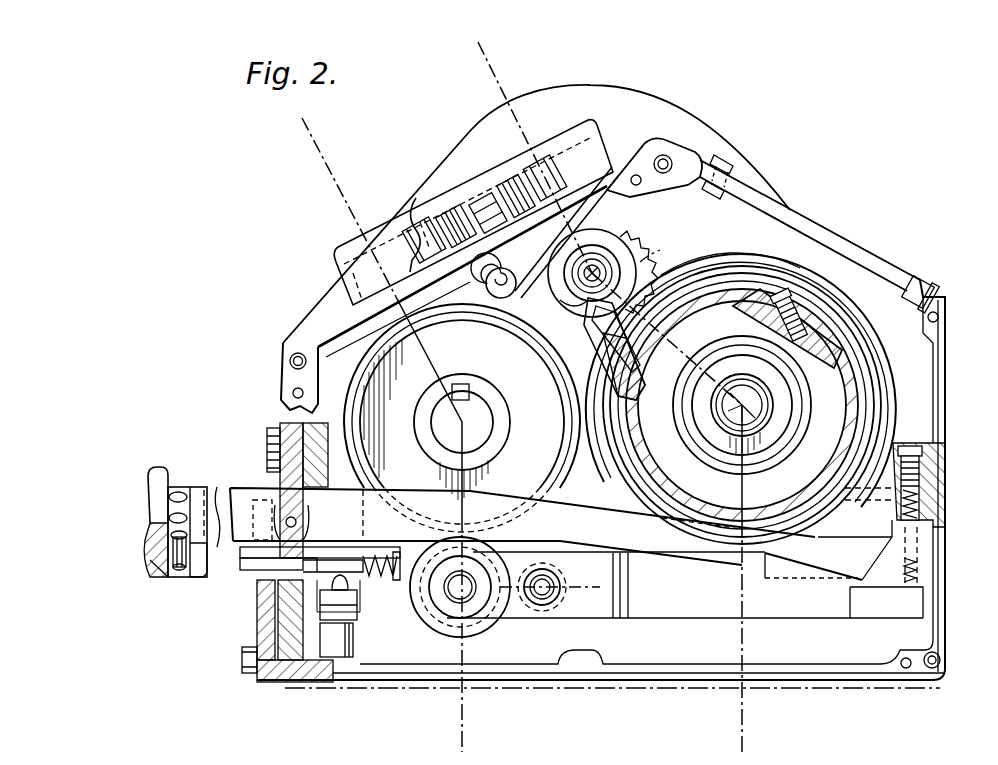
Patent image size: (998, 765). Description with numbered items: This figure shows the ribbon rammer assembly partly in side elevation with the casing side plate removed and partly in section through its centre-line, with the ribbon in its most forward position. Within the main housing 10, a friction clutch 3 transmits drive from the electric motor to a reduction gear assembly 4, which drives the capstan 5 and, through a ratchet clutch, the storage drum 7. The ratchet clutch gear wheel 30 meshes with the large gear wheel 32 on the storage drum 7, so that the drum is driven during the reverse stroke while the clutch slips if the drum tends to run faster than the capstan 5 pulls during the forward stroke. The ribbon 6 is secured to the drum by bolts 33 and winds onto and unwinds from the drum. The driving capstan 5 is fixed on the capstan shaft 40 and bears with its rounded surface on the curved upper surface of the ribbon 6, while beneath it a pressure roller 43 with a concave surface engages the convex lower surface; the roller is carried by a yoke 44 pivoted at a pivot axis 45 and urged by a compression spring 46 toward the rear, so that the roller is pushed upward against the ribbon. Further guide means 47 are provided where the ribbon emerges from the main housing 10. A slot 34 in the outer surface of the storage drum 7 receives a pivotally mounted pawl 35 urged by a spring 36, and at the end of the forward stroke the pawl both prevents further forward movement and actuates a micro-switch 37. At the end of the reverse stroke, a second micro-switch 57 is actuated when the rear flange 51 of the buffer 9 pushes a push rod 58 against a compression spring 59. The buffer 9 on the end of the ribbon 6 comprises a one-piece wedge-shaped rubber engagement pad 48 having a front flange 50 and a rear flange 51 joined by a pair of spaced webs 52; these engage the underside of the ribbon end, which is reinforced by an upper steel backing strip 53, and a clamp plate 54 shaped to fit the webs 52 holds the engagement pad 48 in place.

The friction clutch 3 is at (481, 66).
The reduction gear assembly 4 is at (319, 140).
The capstan 5 is at (363, 348).
The ribbon 6 is at (611, 535).
The storage drum 7 is at (852, 382).
The buffer 9 is at (146, 478).
The main housing 10 is at (680, 146).
The ratchet clutch gear wheel 30 is at (651, 266).
The large gear wheel 32 is at (683, 262).
The bolts 33 is at (801, 318).
The slot 34 is at (644, 362).
The pawl 35 is at (549, 200).
The spring 36 is at (621, 262).
The micro-switch 37 is at (451, 222).
The capstan shaft 40 is at (468, 392).
The pressure roller 43 is at (434, 624).
The yoke 44 is at (706, 598).
The pivot axis 45 is at (532, 602).
The compression spring 46 is at (920, 500).
The guide means 47 is at (262, 472).
The rubber engagement pad 48 is at (161, 468).
The front flange 50 is at (146, 510).
The rear flange 51 is at (200, 578).
The webs 52 is at (170, 553).
The upper steel backing strip 53 is at (168, 547).
The clamp plate 54 is at (158, 578).
The micro-switch 57 is at (325, 596).
The push rod 58 is at (246, 570).
The compression spring 59 is at (395, 578).